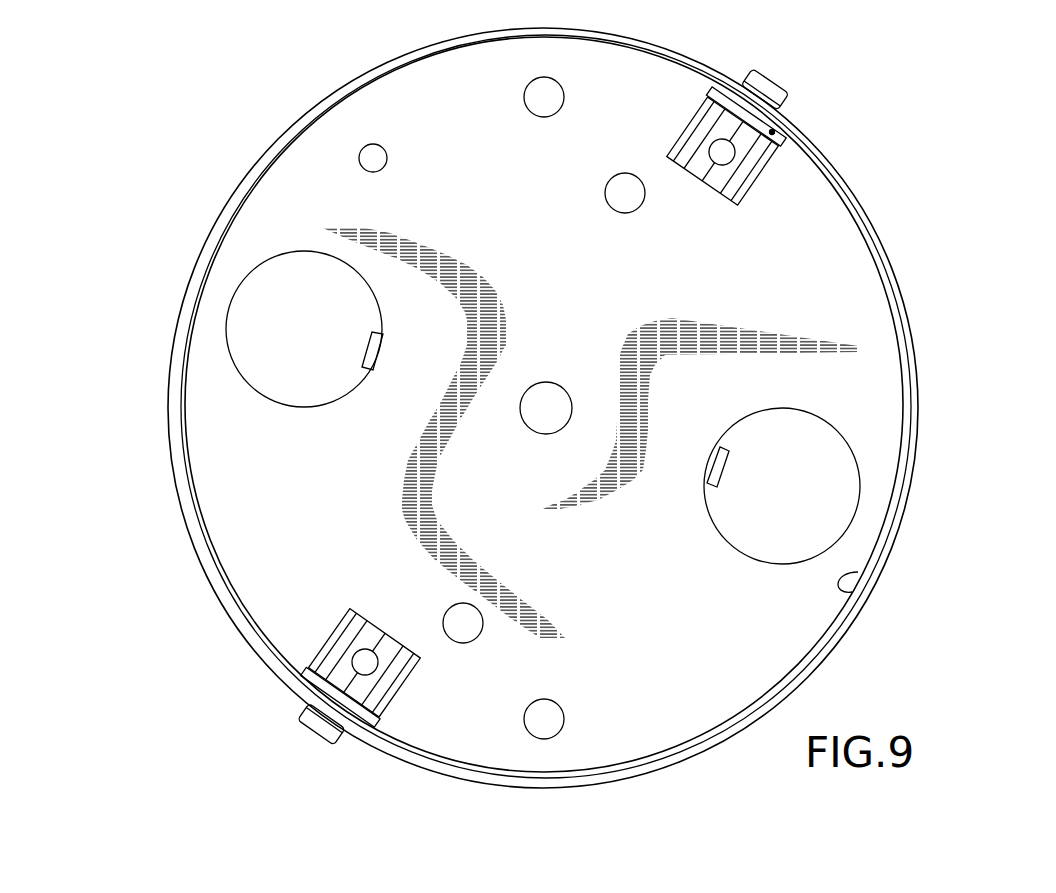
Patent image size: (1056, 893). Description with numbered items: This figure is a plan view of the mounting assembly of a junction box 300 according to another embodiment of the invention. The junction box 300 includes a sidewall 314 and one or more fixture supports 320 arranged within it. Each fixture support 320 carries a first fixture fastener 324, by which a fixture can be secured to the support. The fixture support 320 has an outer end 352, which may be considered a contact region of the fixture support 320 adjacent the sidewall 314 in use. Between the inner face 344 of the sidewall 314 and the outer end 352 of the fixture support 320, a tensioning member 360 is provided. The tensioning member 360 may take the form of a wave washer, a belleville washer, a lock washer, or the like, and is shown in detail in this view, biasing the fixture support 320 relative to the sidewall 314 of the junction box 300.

The junction box 300 is at (933, 292).
The sidewall 314 is at (905, 508).
The fixture support 320 is at (720, 198).
The first fixture fastener 324 is at (360, 660).
The inner face 344 is at (852, 592).
The outer end 352 is at (712, 97).
The tensioning member 360 is at (774, 136).